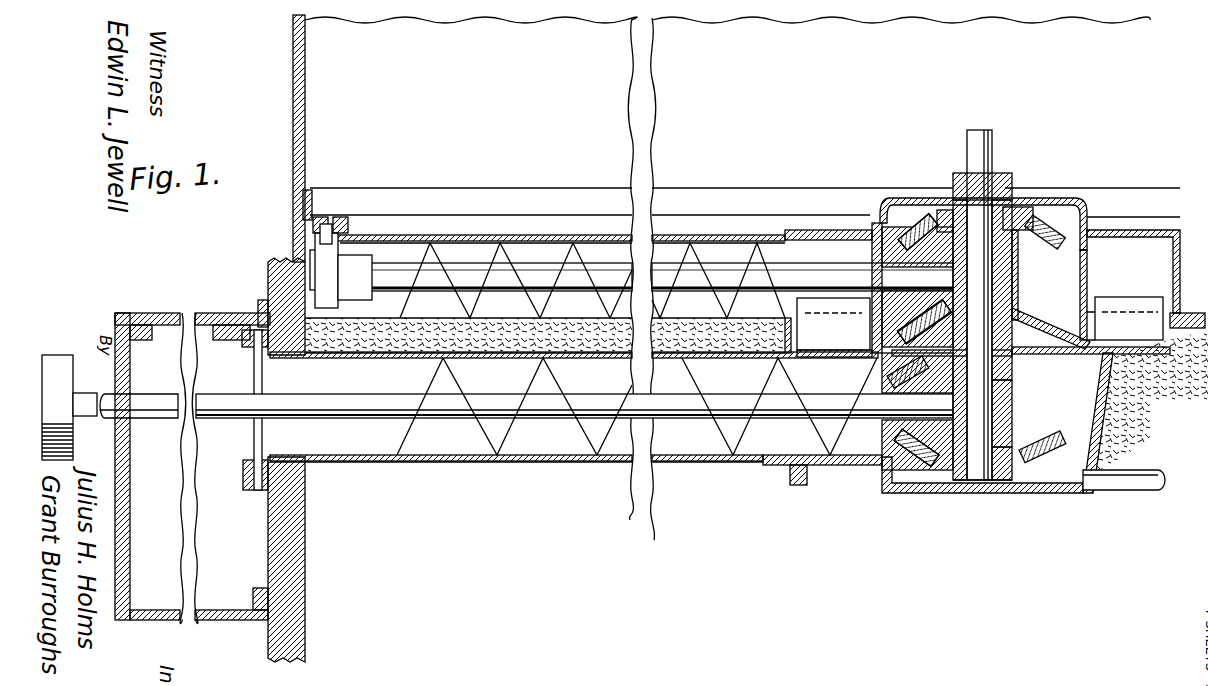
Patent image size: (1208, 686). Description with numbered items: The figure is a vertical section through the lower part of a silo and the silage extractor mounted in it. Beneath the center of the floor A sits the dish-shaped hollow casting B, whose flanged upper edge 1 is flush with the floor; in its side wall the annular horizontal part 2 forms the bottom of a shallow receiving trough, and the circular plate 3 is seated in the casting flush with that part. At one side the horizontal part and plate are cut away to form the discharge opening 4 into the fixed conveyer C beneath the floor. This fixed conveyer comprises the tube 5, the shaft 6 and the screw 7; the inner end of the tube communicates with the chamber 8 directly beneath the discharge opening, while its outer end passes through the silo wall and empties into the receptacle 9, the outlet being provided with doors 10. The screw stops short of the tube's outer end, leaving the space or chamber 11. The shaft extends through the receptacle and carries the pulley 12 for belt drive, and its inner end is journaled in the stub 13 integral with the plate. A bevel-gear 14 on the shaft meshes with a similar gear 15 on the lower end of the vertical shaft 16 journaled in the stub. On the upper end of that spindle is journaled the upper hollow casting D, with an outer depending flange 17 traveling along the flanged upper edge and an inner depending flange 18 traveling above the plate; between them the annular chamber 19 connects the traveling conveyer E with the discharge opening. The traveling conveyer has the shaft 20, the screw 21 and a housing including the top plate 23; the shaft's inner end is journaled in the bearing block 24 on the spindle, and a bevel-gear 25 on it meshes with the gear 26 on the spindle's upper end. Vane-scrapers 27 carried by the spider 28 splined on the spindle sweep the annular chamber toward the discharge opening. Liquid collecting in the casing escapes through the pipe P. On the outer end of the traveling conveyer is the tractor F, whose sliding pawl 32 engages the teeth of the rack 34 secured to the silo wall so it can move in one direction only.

The flanged upper edge 1 is at (778, 318).
The annular horizontal part 2 is at (1150, 360).
The circular plate 3 is at (1063, 356).
The discharge opening 4 is at (810, 352).
The tube 5 is at (570, 460).
The shaft 6 is at (448, 406).
The screw 7 is at (515, 460).
The chamber 8 is at (845, 462).
The receptacle 9 is at (192, 468).
The doors 10 is at (260, 441).
The space or chamber 11 is at (641, 398).
The pulley 12 is at (50, 357).
The stub 13 is at (1013, 406).
The bevel-gear 14 is at (885, 442).
The gear 15 is at (948, 480).
The vertical shaft 16 is at (995, 178).
The outer depending flange 17 is at (1175, 252).
The inner depending flange 18 is at (1080, 282).
The annular chamber 19 is at (1103, 300).
The shaft 20 is at (530, 270).
The screw 21 is at (478, 258).
The top plate 23 is at (740, 290).
The bearing block 24 is at (1006, 266).
The bevel-gear 25 is at (885, 254).
The gear 26 is at (940, 210).
The vane-scrapers 27 is at (1140, 292).
The spider 28 is at (1032, 335).
The sliding pawl 32 is at (322, 218).
The rack 34 is at (343, 218).
The floor A is at (545, 351).
The hollow casting B is at (1130, 436).
The fixed conveyer C is at (1094, 423).
The upper hollow casting D is at (1070, 198).
The traveling conveyer E is at (601, 249).
The tractor F is at (341, 270).
The pipe P is at (1115, 482).